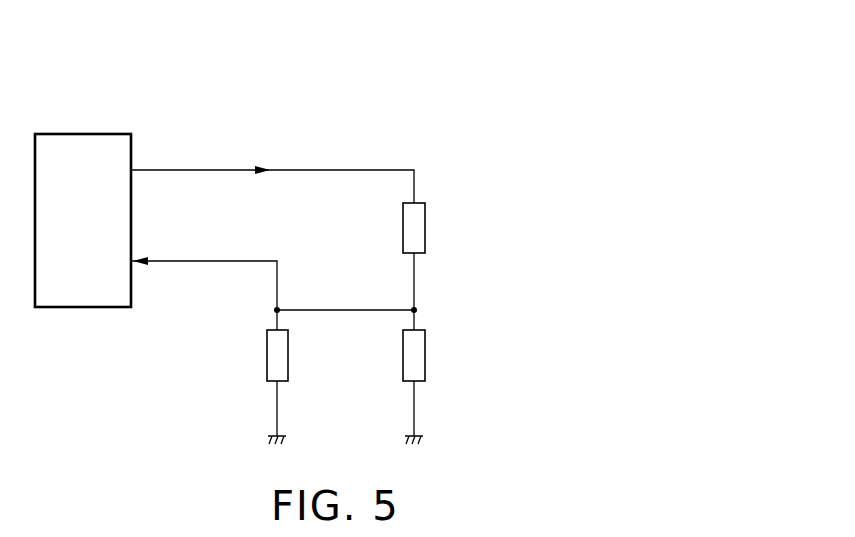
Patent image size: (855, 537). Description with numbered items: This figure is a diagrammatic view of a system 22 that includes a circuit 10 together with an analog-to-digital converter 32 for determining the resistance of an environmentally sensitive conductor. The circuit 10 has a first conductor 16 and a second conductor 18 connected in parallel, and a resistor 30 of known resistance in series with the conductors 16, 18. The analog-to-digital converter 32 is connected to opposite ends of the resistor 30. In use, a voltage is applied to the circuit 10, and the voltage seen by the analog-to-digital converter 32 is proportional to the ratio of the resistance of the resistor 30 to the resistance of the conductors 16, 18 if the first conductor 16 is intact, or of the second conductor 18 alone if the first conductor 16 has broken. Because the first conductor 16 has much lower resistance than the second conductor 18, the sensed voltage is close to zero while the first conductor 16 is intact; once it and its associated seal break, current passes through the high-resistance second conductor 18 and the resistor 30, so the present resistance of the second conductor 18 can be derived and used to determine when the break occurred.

The circuit 10 is at (262, 315).
The first conductor 16 is at (267, 360).
The second conductor 18 is at (425, 358).
The system 22 is at (448, 97).
The resistor 30 is at (425, 223).
The analog-to-digital converter 32 is at (105, 133).